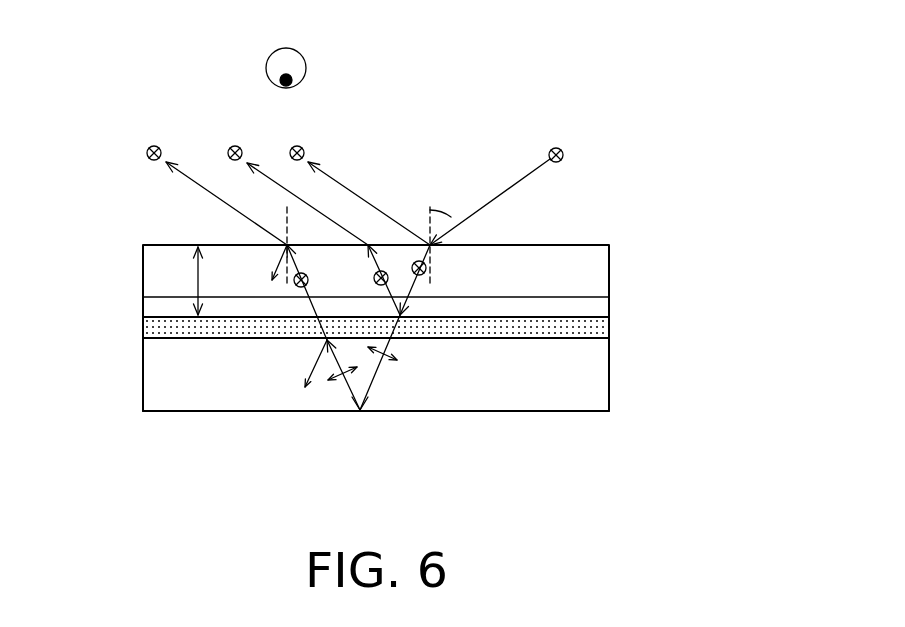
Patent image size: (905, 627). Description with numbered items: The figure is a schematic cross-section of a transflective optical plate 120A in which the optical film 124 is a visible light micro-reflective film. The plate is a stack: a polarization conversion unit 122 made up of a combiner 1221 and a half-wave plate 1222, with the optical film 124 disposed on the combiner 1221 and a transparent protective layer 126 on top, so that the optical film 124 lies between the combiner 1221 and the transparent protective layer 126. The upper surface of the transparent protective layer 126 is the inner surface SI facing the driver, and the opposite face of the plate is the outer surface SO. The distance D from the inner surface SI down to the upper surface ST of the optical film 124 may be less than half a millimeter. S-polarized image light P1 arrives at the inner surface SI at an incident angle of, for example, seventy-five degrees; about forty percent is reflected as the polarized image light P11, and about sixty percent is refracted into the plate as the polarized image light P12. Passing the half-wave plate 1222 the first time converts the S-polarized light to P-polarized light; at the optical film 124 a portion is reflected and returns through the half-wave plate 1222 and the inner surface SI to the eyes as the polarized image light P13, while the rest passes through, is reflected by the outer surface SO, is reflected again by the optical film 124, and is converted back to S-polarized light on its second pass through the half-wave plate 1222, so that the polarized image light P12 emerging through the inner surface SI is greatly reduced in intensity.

The transflective optical plate 120A is at (704, 492).
The transparent protective layer 126 is at (587, 278).
The half-wave plate 1222 is at (585, 308).
The optical film 124 is at (580, 328).
The combiner 1221 is at (590, 375).
The polarization conversion unit 122 is at (756, 98).
The inner surface SI is at (160, 244).
The upper surface of the optical film ST is at (168, 316).
The outer surface SO is at (162, 413).
The distance D is at (206, 281).
The polarized image light P1 is at (517, 183).
The polarized image light reflected by the inner surface P11 is at (352, 189).
The polarized image light refracted into the transflective optical plate P12 is at (196, 180).
The polarized image light reflected by the visible light micro-reflective film P13 is at (279, 182).